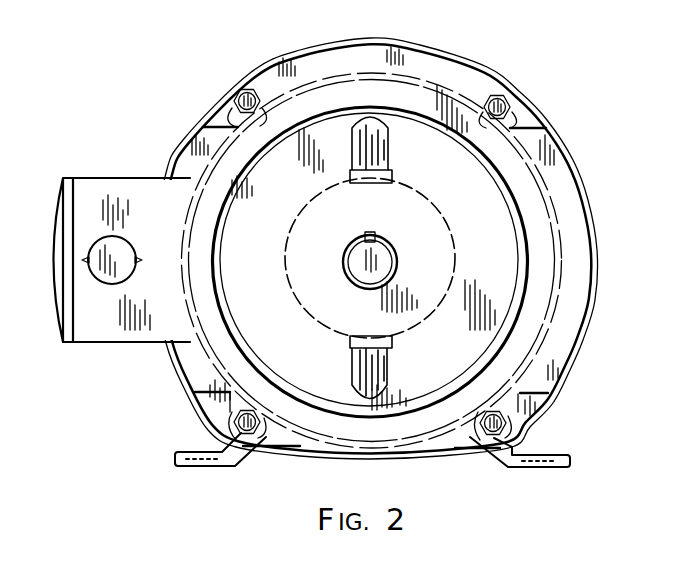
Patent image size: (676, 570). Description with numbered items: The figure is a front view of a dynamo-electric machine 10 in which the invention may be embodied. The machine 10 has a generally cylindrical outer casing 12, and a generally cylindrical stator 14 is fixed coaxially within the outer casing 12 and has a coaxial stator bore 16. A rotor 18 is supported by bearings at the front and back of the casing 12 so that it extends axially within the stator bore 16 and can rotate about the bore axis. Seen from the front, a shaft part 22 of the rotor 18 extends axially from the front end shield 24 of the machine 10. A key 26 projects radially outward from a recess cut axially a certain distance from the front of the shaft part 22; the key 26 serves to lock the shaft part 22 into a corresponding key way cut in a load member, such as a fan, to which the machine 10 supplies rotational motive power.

The dynamo-electric machine 10 is at (228, 47).
The outer casing 12 is at (425, 84).
The stator 14 is at (370, 262).
The stator bore 16 is at (468, 212).
The rotor 18 is at (455, 268).
The shaft part 22 is at (353, 249).
The front end shield 24 is at (327, 97).
The key 26 is at (374, 233).